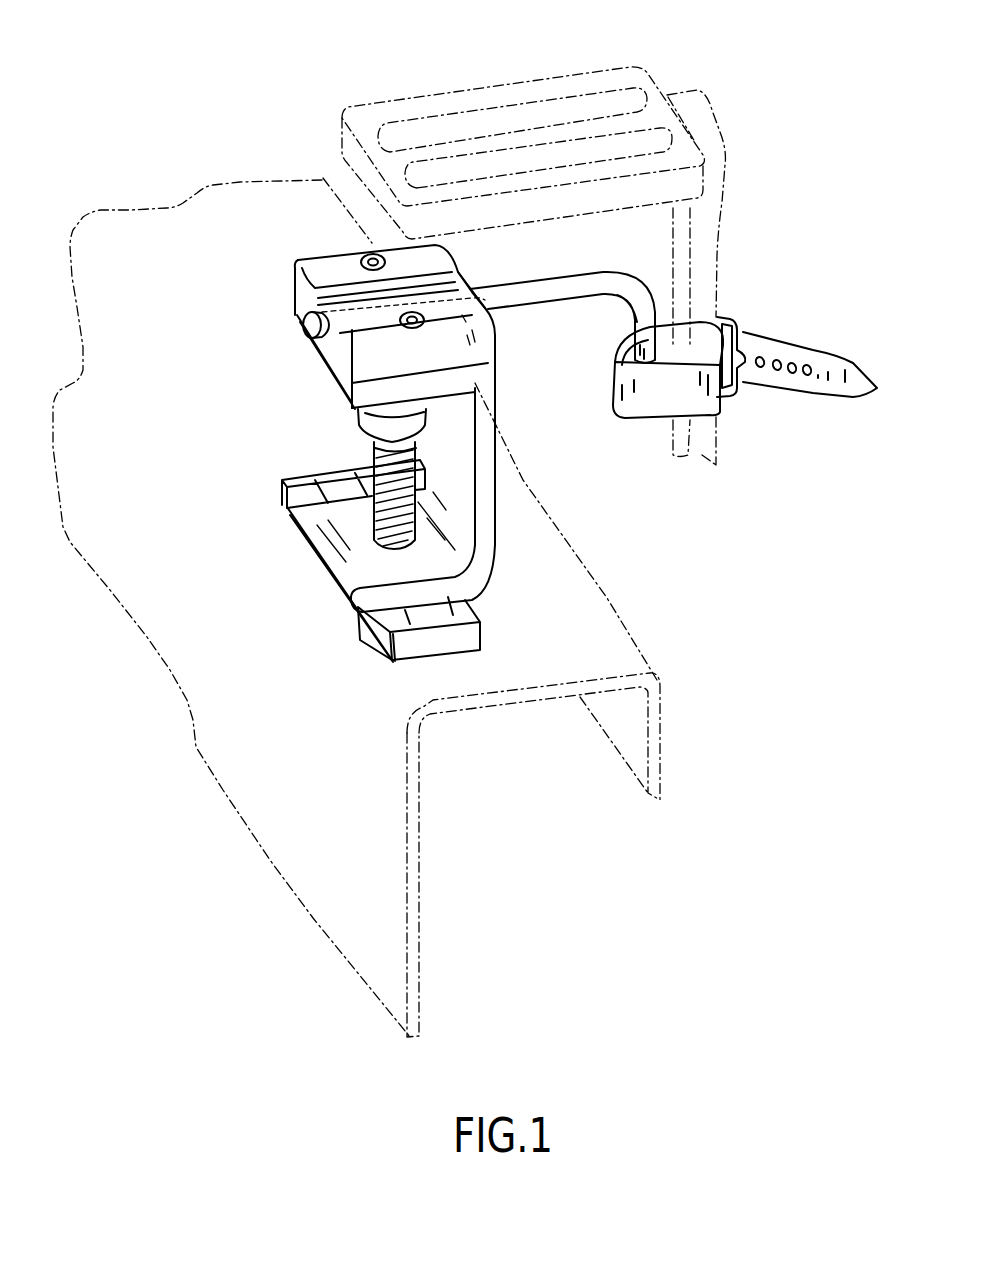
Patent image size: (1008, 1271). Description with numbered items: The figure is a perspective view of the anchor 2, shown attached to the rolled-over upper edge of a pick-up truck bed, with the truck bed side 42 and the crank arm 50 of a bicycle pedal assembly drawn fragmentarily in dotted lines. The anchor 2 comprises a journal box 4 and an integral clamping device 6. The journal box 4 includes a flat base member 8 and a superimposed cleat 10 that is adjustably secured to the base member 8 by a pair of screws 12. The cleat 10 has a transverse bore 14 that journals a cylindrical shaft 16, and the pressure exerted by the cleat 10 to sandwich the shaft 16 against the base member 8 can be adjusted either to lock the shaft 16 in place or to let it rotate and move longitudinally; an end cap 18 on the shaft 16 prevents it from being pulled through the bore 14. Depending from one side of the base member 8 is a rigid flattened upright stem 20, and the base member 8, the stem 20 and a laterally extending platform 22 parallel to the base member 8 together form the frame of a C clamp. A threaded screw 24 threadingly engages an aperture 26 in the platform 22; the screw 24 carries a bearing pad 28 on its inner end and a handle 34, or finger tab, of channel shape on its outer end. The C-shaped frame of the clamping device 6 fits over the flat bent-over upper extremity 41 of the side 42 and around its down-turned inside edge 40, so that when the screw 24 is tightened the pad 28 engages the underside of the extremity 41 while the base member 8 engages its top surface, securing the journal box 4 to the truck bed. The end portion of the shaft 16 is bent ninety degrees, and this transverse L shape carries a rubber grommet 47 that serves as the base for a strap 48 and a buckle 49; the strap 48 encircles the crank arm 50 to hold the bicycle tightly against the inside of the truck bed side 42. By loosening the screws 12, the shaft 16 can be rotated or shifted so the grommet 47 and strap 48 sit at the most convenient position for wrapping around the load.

The anchor 2 is at (599, 481).
The journal box 4 is at (280, 368).
The clamping device 6 is at (325, 450).
The base member 8 is at (368, 395).
The cleat 10 is at (318, 272).
The screws 12 is at (366, 256).
The transverse bore 14 is at (478, 288).
The shaft 16 is at (514, 300).
The end cap 18 is at (312, 326).
The upright stem 20 is at (493, 531).
The laterally extending platform 22 is at (316, 519).
The threaded screw 24 is at (412, 494).
The aperture 26 is at (475, 587).
The bearing pad 28 is at (403, 412).
The handle 34 is at (442, 643).
The down turned inside edge 40 is at (655, 732).
The flat bent over upper extremity 41 is at (272, 220).
The side of the bed 42 is at (353, 867).
The rubber grommet 47 is at (622, 360).
The strap 48 is at (793, 383).
The buckle 49 is at (738, 320).
The crank arm 50 is at (710, 264).